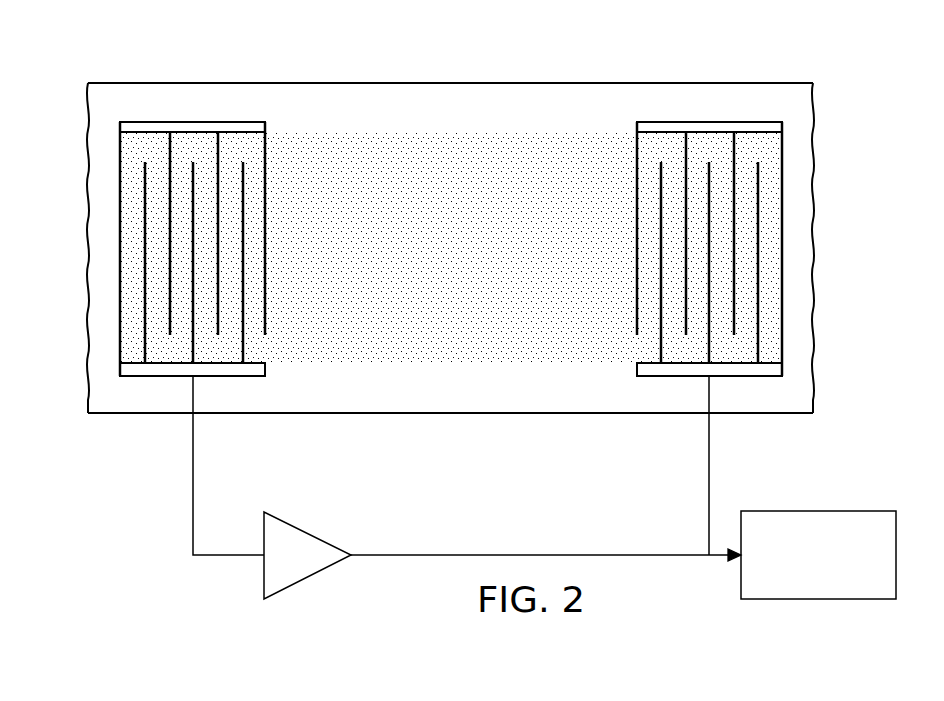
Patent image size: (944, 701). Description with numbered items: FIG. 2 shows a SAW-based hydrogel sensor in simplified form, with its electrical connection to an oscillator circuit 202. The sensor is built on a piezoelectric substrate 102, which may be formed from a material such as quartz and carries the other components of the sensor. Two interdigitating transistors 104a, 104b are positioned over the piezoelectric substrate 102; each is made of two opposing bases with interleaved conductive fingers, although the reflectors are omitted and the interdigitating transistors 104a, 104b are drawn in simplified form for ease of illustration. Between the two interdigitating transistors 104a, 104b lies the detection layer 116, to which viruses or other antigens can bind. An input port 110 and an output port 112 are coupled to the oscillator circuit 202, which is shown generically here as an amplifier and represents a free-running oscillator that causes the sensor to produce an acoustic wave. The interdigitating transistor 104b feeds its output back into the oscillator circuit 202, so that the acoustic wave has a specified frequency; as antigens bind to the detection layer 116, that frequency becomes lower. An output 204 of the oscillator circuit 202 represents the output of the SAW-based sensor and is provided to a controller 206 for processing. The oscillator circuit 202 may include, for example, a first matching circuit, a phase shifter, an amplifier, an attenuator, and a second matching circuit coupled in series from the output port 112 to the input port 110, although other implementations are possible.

The piezoelectric substrate 102 is at (583, 83).
The interdigitating transistor 104a is at (707, 112).
The interdigitating transistor 104b is at (192, 112).
The detection layer 116 is at (473, 264).
The input port 110 is at (710, 462).
The output port 112 is at (192, 484).
The oscillator circuit 202 is at (264, 576).
The output 204 is at (723, 560).
The controller 206 is at (818, 600).